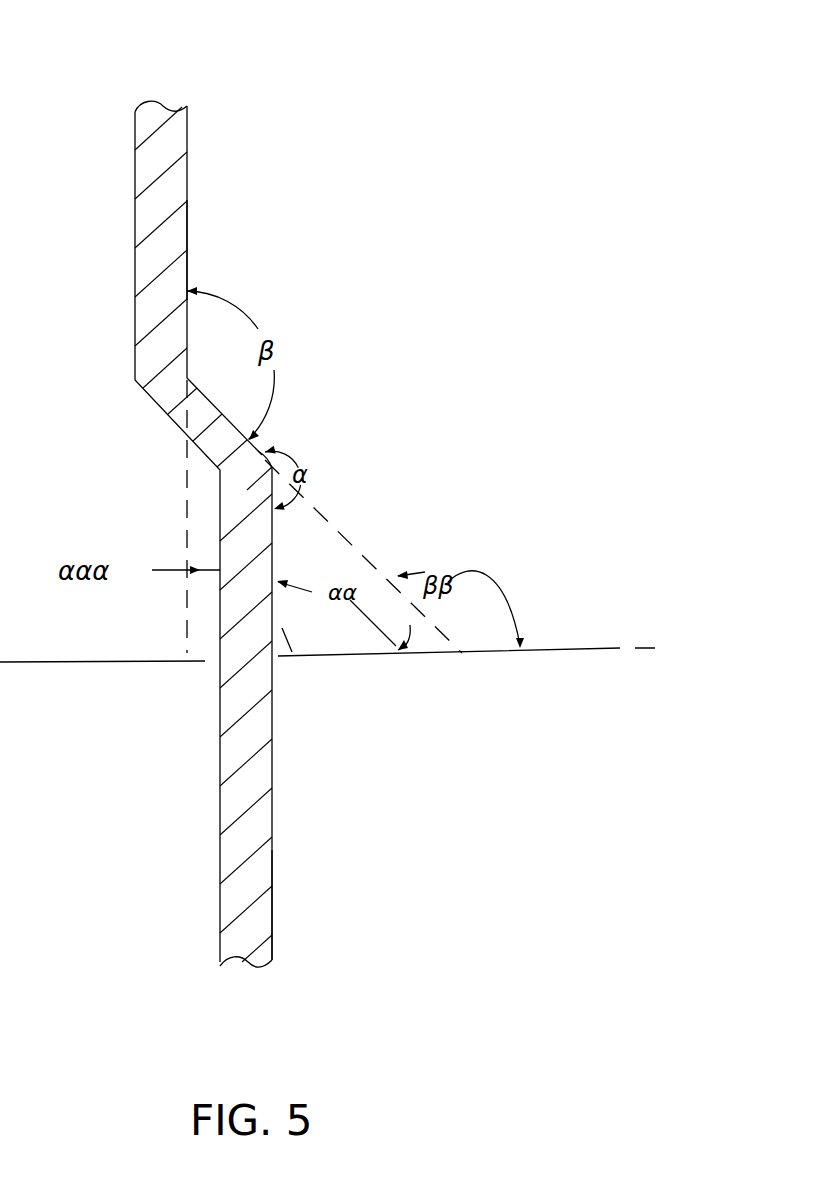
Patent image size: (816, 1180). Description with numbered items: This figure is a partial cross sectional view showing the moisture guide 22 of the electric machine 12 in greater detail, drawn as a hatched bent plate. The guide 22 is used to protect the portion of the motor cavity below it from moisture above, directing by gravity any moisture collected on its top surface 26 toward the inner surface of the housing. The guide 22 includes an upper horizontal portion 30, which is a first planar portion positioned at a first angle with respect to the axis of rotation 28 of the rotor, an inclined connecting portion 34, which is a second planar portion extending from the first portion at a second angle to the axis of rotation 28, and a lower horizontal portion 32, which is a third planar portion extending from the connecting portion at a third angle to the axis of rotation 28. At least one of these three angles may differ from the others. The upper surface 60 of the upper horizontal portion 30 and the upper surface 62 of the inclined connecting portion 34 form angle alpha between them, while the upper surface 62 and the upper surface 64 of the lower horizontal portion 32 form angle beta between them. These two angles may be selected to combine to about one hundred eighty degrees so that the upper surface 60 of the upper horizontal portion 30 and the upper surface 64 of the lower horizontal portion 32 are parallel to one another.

The electric machine 12 is at (430, 80).
The moisture guide 22 is at (352, 168).
The top surface 26 is at (187, 178).
The axis of rotation 28 is at (583, 648).
The upper horizontal portion 30 is at (272, 812).
The lower horizontal portion 32 is at (187, 232).
The inclined connecting portion 34 is at (262, 450).
The upper surface of the upper horizontal portion 60 is at (272, 905).
The upper surface of the inclined connecting portion 62 is at (264, 453).
The upper surface of the lower horizontal portion 64 is at (187, 118).